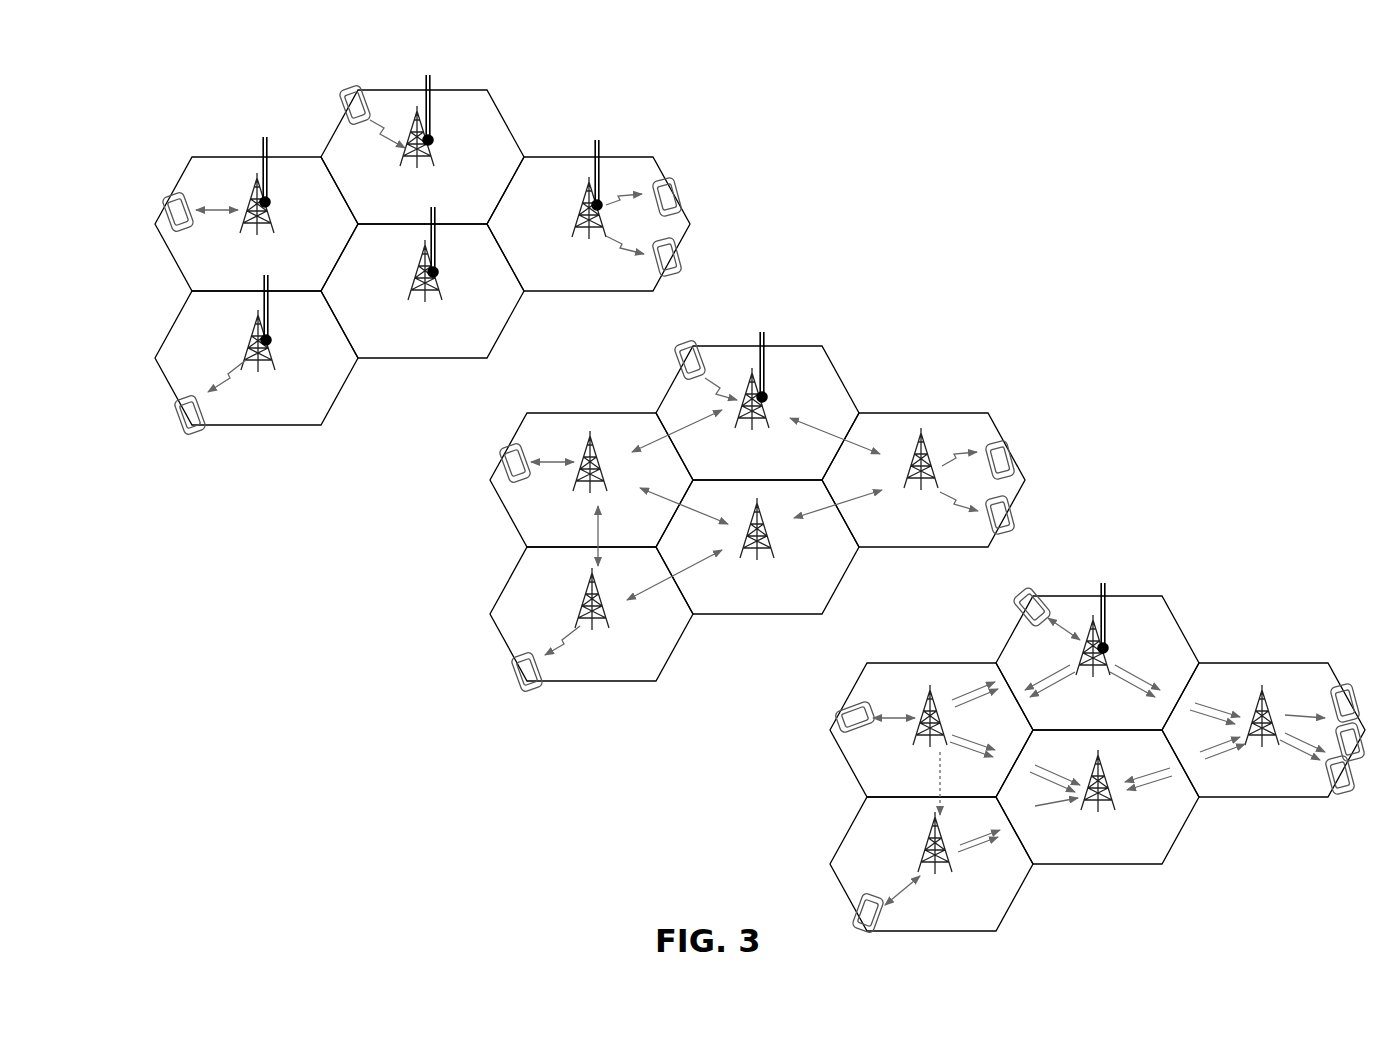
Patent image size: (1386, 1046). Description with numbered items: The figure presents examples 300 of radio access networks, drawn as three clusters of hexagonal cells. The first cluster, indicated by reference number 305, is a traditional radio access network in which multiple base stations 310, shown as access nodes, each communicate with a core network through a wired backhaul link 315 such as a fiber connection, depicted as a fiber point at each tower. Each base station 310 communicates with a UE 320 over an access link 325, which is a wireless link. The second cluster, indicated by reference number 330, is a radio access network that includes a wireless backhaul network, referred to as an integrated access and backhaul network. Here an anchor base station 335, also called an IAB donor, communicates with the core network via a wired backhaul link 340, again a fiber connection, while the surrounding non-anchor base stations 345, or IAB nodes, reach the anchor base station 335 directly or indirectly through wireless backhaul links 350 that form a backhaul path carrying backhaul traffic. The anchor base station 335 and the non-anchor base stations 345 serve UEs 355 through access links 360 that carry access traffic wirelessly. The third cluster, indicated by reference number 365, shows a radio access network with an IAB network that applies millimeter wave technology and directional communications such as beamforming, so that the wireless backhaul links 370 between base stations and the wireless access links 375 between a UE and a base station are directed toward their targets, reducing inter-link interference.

The examples of radio access networks 300 is at (178, 100).
The traditional radio access network 305 is at (312, 78).
The base station 310 is at (562, 222).
The wired backhaul link 315 is at (594, 143).
The UE 320 is at (692, 206).
The access link 325 is at (638, 99).
The radio access network with wireless backhaul network 330 is at (640, 374).
The anchor base station 335 is at (768, 410).
The wired backhaul link 340 is at (768, 340).
The non-anchor base station 345 is at (748, 565).
The backhaul link 350 is at (677, 550).
The UE 355 is at (1013, 462).
The access link 360 is at (975, 357).
The radio access network using millimeter wave technology and directional communicat 365 is at (985, 646).
The wireless backhaul link 370 is at (1218, 700).
The wireless access link 375 is at (1297, 717).